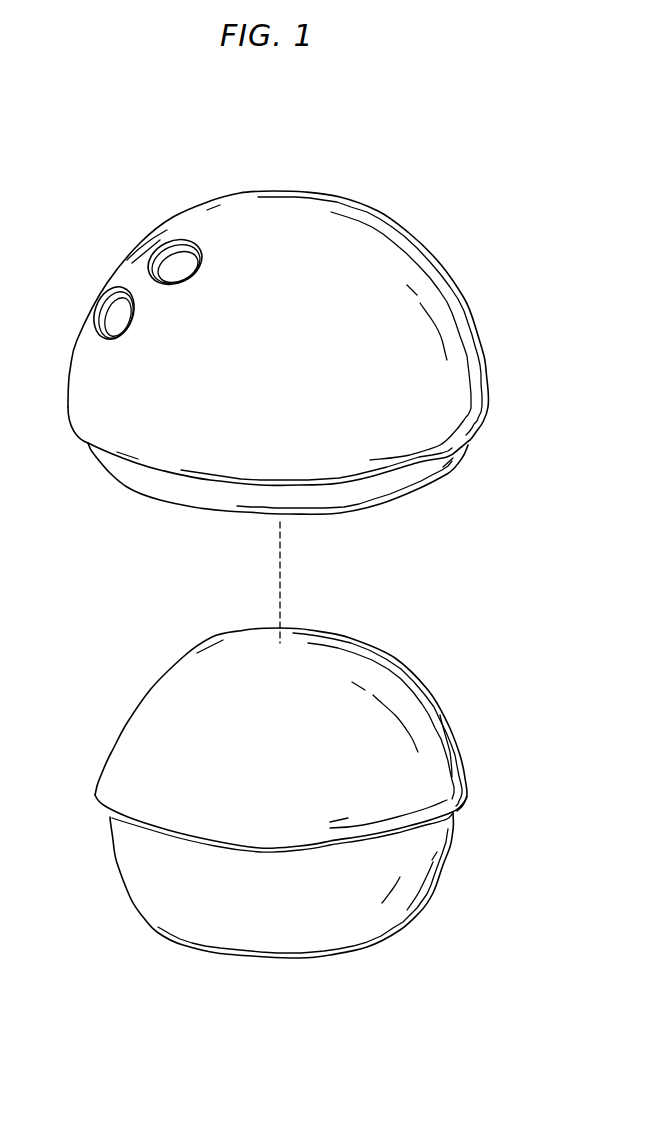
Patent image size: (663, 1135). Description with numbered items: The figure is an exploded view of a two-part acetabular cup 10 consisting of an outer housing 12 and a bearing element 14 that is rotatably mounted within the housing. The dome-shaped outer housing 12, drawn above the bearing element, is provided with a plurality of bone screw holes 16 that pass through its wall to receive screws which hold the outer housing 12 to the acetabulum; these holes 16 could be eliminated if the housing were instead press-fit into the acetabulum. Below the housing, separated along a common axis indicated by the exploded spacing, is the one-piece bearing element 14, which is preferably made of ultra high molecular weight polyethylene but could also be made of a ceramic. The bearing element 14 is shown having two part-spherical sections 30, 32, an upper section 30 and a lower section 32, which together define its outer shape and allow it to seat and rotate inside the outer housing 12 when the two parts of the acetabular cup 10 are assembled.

The two-part acetabular cup 10 is at (469, 184).
The outer housing 12 is at (323, 197).
The bearing element 14 is at (170, 710).
The bone screw holes 16 is at (117, 330).
The part-spherical section 30 is at (390, 662).
The part-spherical section 32 is at (437, 867).